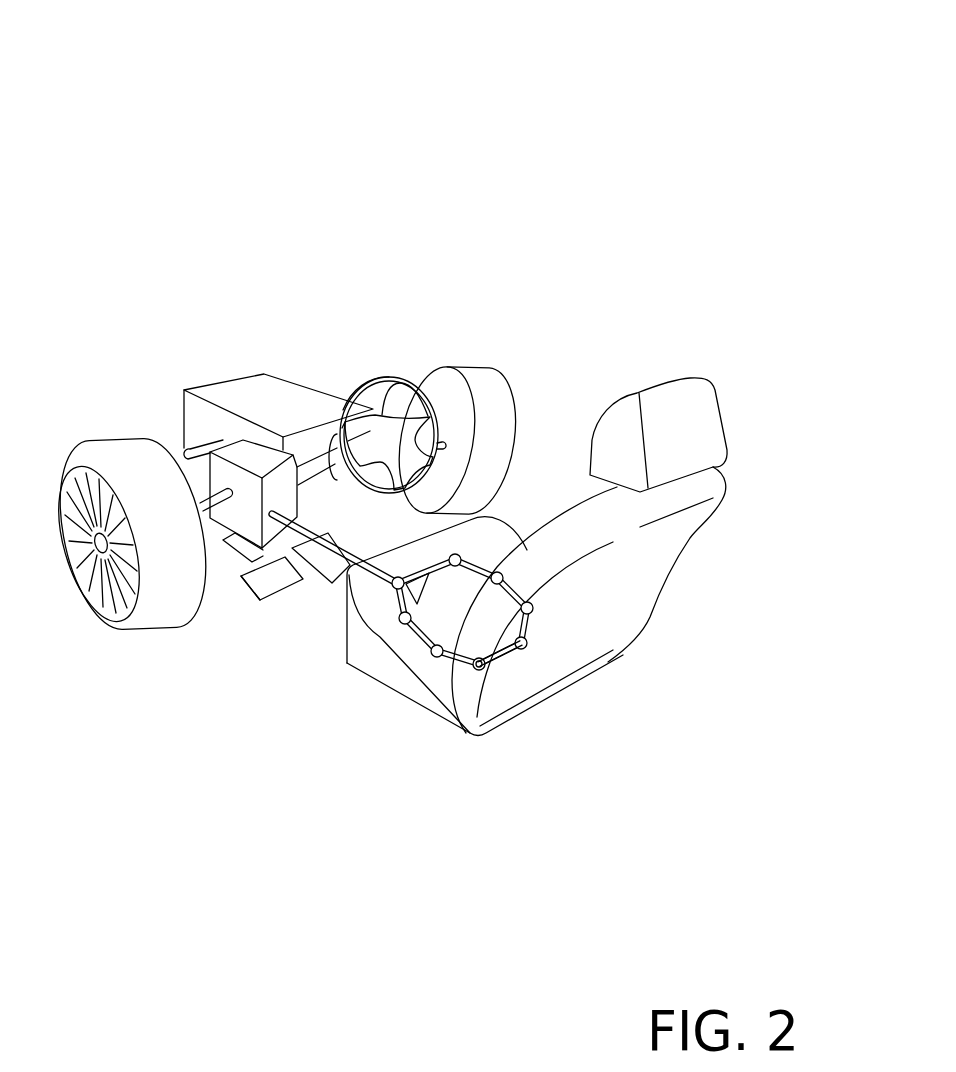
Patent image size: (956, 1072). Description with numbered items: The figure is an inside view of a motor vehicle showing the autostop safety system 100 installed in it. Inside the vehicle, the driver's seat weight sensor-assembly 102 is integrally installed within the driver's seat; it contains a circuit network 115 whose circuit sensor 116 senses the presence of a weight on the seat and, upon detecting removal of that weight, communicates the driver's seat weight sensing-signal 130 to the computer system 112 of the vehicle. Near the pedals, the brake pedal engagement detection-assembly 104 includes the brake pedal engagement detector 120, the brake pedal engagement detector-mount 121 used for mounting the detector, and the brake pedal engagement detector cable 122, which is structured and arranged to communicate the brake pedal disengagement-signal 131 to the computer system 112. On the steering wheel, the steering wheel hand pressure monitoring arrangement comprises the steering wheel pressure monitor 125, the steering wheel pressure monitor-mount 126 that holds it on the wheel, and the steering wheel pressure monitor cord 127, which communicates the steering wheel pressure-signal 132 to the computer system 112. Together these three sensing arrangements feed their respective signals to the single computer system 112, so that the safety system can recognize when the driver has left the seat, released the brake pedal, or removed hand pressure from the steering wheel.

The autostop safety system 100 is at (538, 107).
The driver's seat weight sensor-assembly 102 is at (575, 137).
The brake pedal engagement detection-assembly 104 is at (406, 437).
The computer system 112 is at (247, 463).
The circuit network 115 is at (448, 662).
The circuit sensor 116 is at (477, 672).
The brake pedal engagement detector 120 is at (277, 578).
The brake pedal engagement detector-mount 121 is at (261, 578).
The brake pedal engagement detector cable 122 is at (245, 560).
The steering wheel pressure monitor 125 is at (395, 377).
The steering wheel pressure monitor-mount 126 is at (380, 378).
The steering wheel pressure monitor cord 127 is at (353, 396).
The driver's seat weight sensing-signal 130 is at (483, 672).
The brake pedal disengagement-signal 131 is at (503, 663).
The steering wheel pressure-signal 132 is at (381, 584).